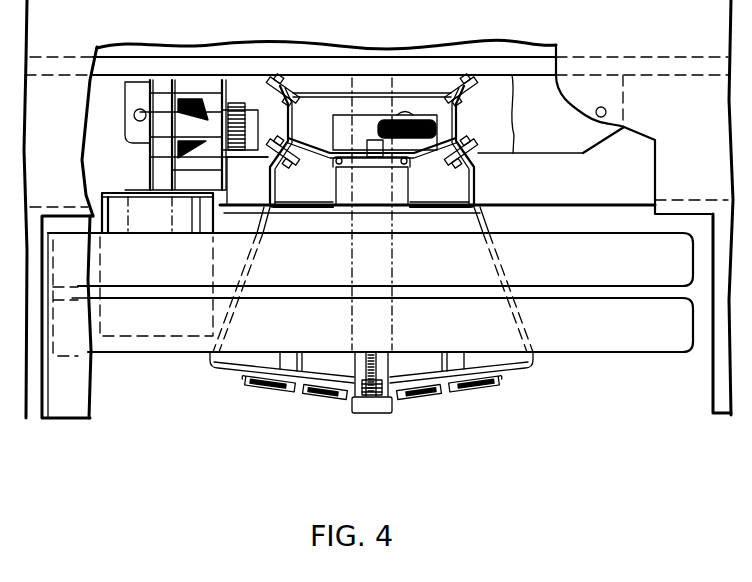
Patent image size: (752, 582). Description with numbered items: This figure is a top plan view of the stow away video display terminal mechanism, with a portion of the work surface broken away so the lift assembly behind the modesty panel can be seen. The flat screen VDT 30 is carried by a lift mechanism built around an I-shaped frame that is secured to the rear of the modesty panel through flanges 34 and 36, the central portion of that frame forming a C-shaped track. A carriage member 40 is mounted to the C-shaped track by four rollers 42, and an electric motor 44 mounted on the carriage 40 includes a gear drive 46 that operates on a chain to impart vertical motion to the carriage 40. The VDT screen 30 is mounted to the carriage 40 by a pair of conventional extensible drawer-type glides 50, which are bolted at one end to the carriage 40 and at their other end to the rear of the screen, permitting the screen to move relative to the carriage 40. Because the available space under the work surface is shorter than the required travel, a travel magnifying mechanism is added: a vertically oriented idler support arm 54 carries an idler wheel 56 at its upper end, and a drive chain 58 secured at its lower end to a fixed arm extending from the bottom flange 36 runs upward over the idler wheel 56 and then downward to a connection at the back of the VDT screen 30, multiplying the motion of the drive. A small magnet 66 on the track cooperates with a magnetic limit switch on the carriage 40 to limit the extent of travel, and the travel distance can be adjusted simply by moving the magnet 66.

The flat screen VDT 30 is at (629, 333).
The flange 34 is at (579, 138).
The bottom flange 36 is at (493, 147).
The carriage member 40 is at (529, 353).
The rollers 42 is at (280, 80).
The electric motor 44 is at (152, 218).
The gear drive 46 is at (158, 140).
The extensible drawer-type glides 50 is at (265, 397).
The idler support arm 54 is at (391, 373).
The idler wheel 56 is at (363, 422).
The drive chain 58 is at (367, 412).
The magnet 66 is at (367, 167).